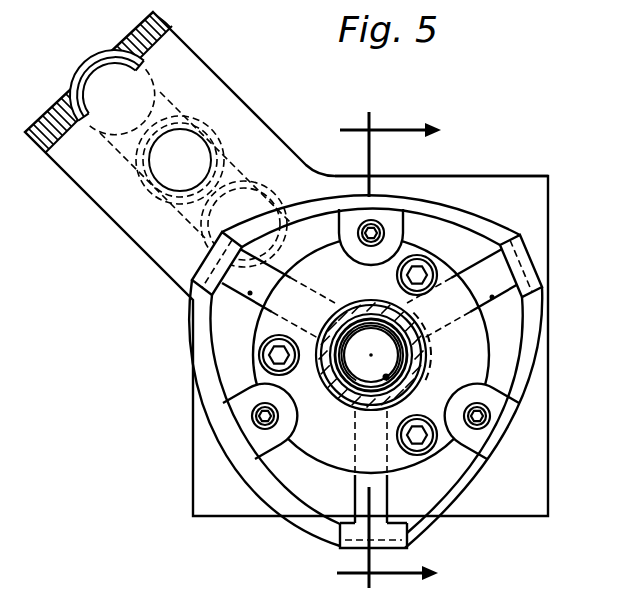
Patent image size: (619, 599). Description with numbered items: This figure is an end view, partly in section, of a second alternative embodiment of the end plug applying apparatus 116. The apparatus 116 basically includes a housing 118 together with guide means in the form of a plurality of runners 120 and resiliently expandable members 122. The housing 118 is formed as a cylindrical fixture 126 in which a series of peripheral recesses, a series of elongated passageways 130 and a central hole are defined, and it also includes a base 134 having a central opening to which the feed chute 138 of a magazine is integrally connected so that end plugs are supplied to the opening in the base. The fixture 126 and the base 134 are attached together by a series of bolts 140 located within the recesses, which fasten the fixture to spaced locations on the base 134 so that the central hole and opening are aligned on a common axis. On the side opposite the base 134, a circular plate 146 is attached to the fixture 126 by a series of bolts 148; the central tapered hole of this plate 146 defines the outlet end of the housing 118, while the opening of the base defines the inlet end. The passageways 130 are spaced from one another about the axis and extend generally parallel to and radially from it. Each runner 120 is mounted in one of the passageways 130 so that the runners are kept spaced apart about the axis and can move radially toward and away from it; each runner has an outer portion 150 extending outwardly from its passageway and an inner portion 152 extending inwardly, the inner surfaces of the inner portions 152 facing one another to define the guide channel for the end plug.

The end plug applying apparatus 116 is at (500, 140).
The housing 118 is at (319, 264).
The runners 120 is at (478, 268).
The resiliently expandable members 122 is at (466, 488).
The cylindrical fixture 126 is at (512, 345).
The elongated passageways 130 is at (538, 306).
The base 134 is at (457, 175).
The feed chute 138 is at (232, 84).
The bolts 140 is at (378, 228).
The circular plate 146 is at (268, 462).
The bolts 148 is at (417, 274).
The outer portions 150 is at (530, 270).
The inner portions 152 is at (422, 352).